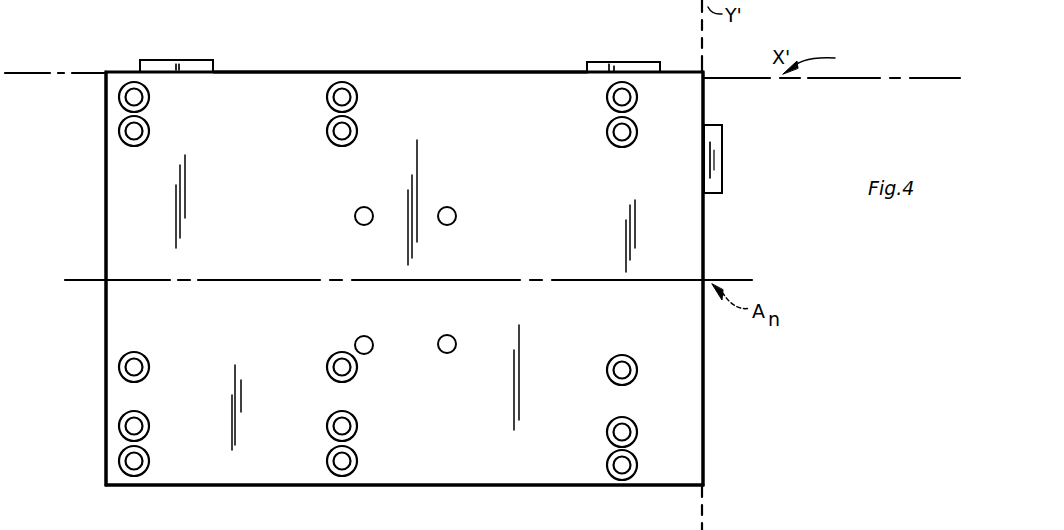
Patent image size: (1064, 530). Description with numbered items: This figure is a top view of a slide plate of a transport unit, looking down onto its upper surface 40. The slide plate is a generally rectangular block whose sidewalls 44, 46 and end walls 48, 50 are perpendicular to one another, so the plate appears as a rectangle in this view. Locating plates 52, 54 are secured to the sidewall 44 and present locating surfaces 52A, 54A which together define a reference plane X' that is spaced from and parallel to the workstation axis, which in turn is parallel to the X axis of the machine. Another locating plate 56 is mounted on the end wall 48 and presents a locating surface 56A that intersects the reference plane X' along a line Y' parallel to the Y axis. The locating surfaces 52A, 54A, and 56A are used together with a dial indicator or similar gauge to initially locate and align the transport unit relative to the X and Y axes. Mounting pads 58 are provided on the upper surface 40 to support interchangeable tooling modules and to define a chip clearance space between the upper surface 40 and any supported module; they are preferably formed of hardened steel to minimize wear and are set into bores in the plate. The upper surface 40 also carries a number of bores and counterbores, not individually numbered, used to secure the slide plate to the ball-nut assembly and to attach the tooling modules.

The upper surface 40 is at (530, 219).
The sidewall 44 is at (330, 72).
The sidewall 46 is at (432, 486).
The end wall 48 is at (704, 224).
The end wall 50 is at (106, 214).
The locating plate 52 is at (616, 62).
The locating surface 52A is at (598, 73).
The locating plate 54 is at (170, 60).
The locating surface 54A is at (190, 73).
The locating plate 56 is at (723, 143).
The locating surface 56A is at (704, 133).
The mounting pads 58 is at (328, 364).